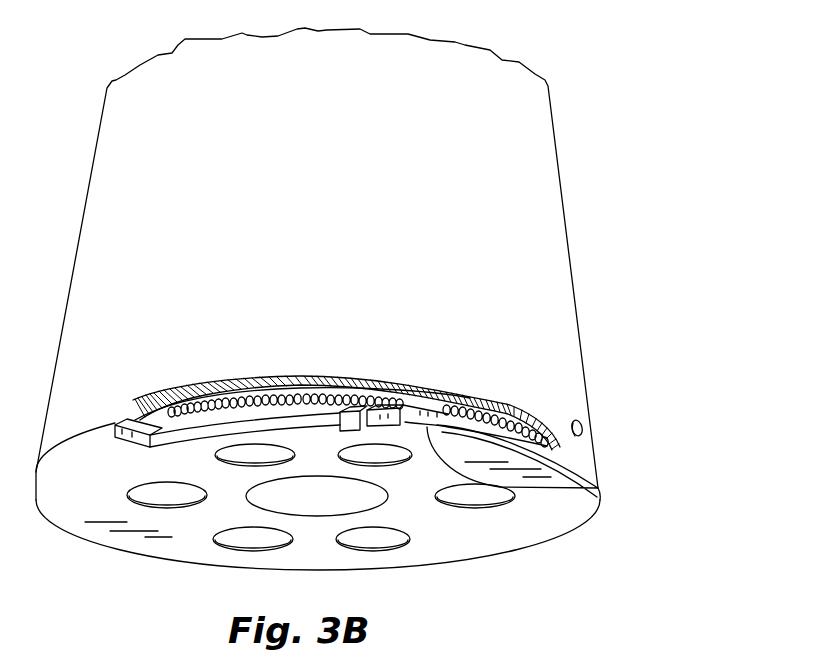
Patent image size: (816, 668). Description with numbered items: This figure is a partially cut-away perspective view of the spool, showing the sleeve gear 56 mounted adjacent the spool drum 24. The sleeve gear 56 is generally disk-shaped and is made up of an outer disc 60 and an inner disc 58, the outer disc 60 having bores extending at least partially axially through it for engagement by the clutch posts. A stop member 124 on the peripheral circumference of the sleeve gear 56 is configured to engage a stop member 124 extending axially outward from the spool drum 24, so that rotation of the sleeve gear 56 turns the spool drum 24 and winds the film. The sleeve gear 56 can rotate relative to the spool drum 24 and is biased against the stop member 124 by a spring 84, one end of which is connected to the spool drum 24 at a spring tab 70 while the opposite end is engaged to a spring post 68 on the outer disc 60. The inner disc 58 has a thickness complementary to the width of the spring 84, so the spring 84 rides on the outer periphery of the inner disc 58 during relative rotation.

The spool drum 24 is at (560, 150).
The sleeve gear 56 is at (586, 513).
The inner disc 58 is at (408, 400).
The outer disc 60 is at (551, 539).
The spring post 68 is at (173, 411).
The spring tab 70 is at (566, 424).
The spring 84 is at (490, 416).
The stop member 124 is at (598, 488).